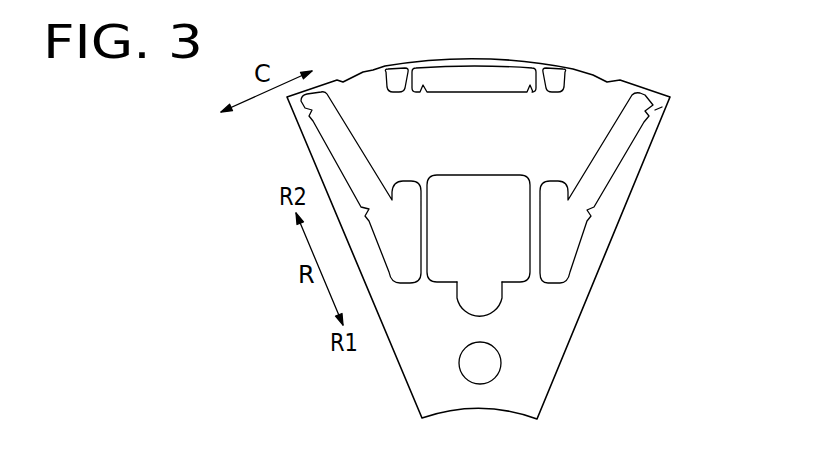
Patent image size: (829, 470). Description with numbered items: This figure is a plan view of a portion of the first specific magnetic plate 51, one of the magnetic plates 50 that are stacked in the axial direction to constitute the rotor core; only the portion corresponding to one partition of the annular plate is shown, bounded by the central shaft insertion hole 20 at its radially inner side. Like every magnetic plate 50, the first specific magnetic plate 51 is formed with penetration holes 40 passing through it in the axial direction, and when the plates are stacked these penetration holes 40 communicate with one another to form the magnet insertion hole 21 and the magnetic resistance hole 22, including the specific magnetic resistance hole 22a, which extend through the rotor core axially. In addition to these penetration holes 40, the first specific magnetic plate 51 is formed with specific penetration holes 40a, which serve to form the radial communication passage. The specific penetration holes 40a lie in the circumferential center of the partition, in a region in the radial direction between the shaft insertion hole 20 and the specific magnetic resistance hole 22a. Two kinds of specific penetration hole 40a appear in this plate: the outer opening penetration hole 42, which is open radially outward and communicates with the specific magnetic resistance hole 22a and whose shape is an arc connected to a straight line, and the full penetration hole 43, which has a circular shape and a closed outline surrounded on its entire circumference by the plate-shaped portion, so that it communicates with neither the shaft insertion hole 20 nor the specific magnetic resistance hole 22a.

The shaft insertion hole 20 is at (437, 415).
The magnet insertion hole 21 is at (473, 82).
The magnetic resistance hole 22 is at (398, 77).
The specific magnetic resistance hole 22a is at (477, 190).
The penetration hole 40 is at (467, 209).
The specific penetration hole 40a is at (596, 337).
The outer opening penetration hole 42 is at (477, 294).
The full penetration hole 43 is at (488, 363).
The magnetic plate 50 is at (731, 117).
The first specific magnetic plate 51 is at (657, 110).